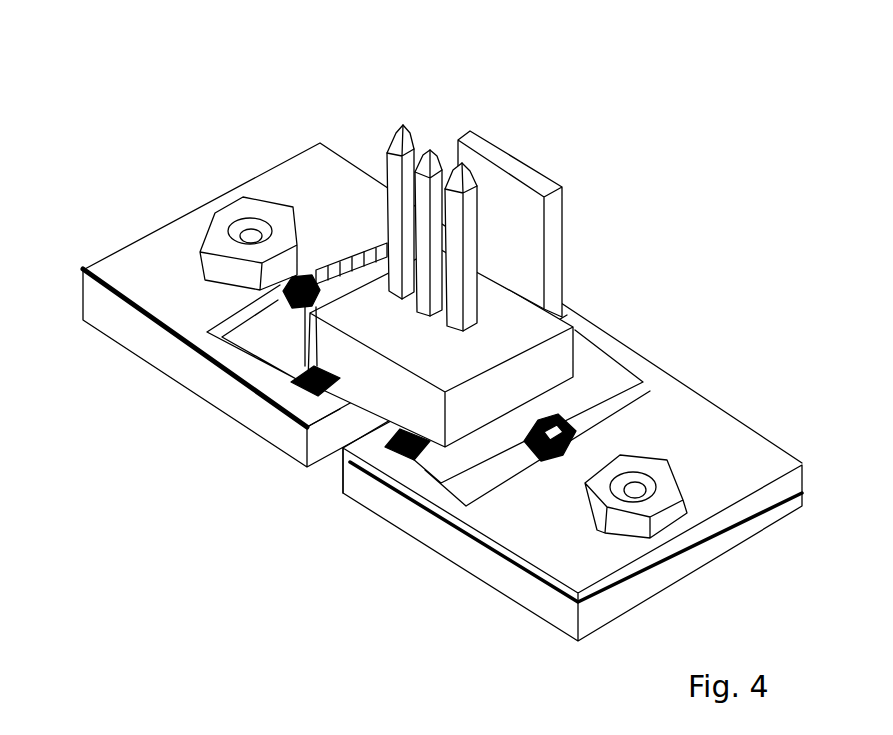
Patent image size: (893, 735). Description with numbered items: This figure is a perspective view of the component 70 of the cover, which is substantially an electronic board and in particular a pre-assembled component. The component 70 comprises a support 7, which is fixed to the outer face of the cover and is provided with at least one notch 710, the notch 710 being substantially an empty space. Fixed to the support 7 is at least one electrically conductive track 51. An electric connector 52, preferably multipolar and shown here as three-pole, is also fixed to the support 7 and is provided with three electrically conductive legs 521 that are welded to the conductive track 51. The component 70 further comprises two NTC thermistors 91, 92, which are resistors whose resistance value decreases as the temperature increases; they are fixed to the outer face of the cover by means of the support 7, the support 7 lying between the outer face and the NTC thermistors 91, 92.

The component 70 is at (432, 347).
The support 7 is at (113, 318).
The notch 710 is at (342, 453).
The electrically conductive track 51 is at (640, 381).
The electric connector 52 is at (522, 302).
The electrically conductive legs 521 is at (318, 368).
The NTC thermistor 91 is at (296, 303).
The NTC thermistor 92 is at (537, 447).